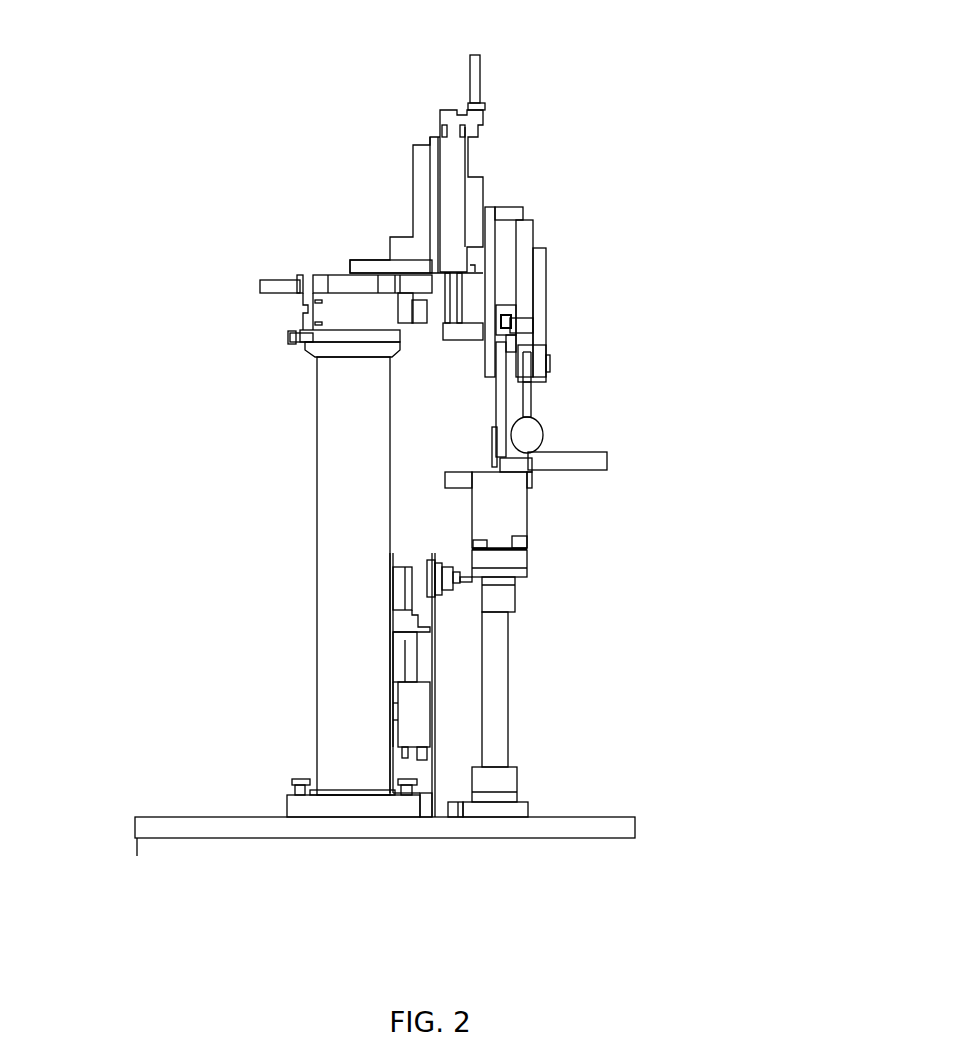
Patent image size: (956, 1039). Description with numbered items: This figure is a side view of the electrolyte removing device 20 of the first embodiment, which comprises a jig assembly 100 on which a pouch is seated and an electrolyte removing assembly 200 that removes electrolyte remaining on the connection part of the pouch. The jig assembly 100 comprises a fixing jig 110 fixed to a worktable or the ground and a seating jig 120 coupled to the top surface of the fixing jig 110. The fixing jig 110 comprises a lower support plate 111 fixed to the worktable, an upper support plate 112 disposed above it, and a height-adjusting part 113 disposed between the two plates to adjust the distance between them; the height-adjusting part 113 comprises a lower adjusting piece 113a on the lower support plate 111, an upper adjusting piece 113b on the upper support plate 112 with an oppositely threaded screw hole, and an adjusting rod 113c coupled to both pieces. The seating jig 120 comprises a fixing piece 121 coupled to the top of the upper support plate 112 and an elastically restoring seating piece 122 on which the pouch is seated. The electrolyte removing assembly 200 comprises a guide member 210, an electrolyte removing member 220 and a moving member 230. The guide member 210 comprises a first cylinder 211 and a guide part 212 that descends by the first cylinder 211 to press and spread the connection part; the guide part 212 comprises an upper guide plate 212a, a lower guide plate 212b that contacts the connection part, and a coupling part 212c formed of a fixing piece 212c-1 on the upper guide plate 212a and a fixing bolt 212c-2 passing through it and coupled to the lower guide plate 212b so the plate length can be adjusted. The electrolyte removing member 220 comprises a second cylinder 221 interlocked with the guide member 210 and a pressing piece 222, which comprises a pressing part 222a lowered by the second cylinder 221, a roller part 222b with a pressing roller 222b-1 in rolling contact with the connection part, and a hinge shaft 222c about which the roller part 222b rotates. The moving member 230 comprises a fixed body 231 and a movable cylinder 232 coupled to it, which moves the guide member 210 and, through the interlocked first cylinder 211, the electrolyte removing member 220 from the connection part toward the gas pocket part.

The electrolyte removing device 20 is at (119, 93).
The jig assembly 100 is at (78, 478).
The fixing jig 110 is at (140, 570).
The lower support plate 111 is at (472, 808).
The upper support plate 112 is at (478, 572).
The height-adjusting part 113 is at (205, 607).
The lower adjusting piece 113a is at (473, 778).
The upper adjusting piece 113b is at (493, 598).
The adjusting rod 113c is at (487, 697).
The seating jig 120 is at (140, 445).
The fixing piece 121 is at (487, 514).
The seating piece 122 is at (450, 471).
The electrolyte removing assembly 200 is at (770, 700).
The guide member 210 is at (410, 60).
The first cylinder 211 is at (445, 119).
The guide part 212 is at (365, 112).
The upper guide plate 212a is at (489, 233).
The lower guide plate 212b is at (500, 413).
The coupling part 212c is at (640, 125).
The fixing piece 212c-1 is at (508, 318).
The fixing bolt 212c-2 is at (502, 312).
The electrolyte removing member 220 is at (725, 390).
The second cylinder 221 is at (515, 295).
The pressing piece 222 is at (660, 305).
The pressing part 222a is at (542, 345).
The roller part 222b is at (528, 397).
The pressing roller 222b-1 is at (537, 433).
The hinge shaft 222c is at (548, 365).
The moving member 230 is at (183, 332).
The fixed body 231 is at (325, 400).
The movable cylinder 232 is at (308, 312).